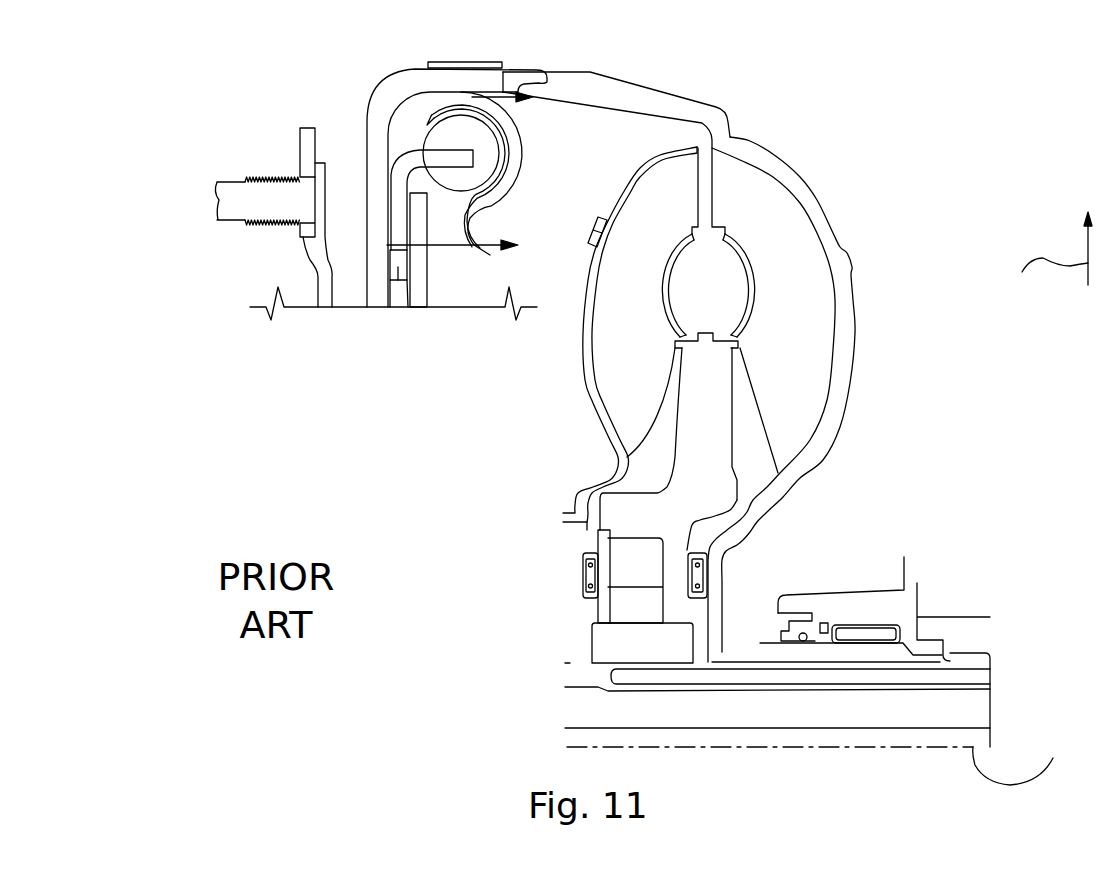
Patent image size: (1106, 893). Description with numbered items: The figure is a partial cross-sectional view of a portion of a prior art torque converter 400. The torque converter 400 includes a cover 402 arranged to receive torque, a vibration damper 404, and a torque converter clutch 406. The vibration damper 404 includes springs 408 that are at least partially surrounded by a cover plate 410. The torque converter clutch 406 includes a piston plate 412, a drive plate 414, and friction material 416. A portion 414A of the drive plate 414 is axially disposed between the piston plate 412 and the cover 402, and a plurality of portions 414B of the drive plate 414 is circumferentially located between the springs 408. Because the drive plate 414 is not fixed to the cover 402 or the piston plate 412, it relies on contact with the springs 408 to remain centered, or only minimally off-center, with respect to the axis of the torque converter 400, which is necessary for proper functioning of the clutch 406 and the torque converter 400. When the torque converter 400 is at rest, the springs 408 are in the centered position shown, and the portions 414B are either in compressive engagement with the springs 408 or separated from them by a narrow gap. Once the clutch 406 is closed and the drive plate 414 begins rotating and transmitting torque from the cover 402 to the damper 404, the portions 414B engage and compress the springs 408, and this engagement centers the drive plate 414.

The torque converter 400 is at (829, 124).
The cover 402 is at (402, 95).
The vibration damper 404 is at (490, 93).
The torque converter clutch 406 is at (378, 162).
The springs 408 is at (473, 118).
The cover plate 410 is at (470, 135).
The piston plate 412 is at (385, 242).
The drive plate 414 is at (390, 217).
The portion of the drive plate 414A is at (400, 268).
The portions of the drive plate 414B is at (473, 167).
The friction material 416 is at (393, 222).